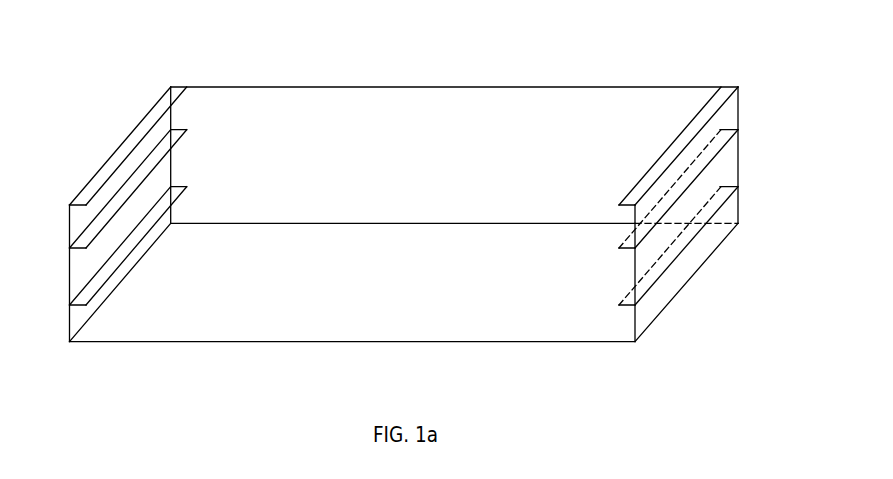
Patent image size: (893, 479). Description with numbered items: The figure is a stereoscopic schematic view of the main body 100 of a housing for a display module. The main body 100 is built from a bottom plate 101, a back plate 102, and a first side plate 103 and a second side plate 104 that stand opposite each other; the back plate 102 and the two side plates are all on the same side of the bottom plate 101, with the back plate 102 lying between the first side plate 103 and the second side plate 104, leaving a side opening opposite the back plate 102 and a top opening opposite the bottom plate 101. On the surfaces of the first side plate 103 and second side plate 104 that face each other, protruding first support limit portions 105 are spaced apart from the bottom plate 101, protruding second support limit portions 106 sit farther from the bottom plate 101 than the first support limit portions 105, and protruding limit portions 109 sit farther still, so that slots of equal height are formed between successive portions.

The main body 100 is at (406, 198).
The bottom plate 101 is at (557, 335).
The back plate 102 is at (513, 98).
The first side plate 103 is at (78, 268).
The second side plate 104 is at (725, 167).
The first support limit portions 105 is at (77, 295).
The second support limit portions 106 is at (83, 241).
The limit portions 109 is at (76, 197).